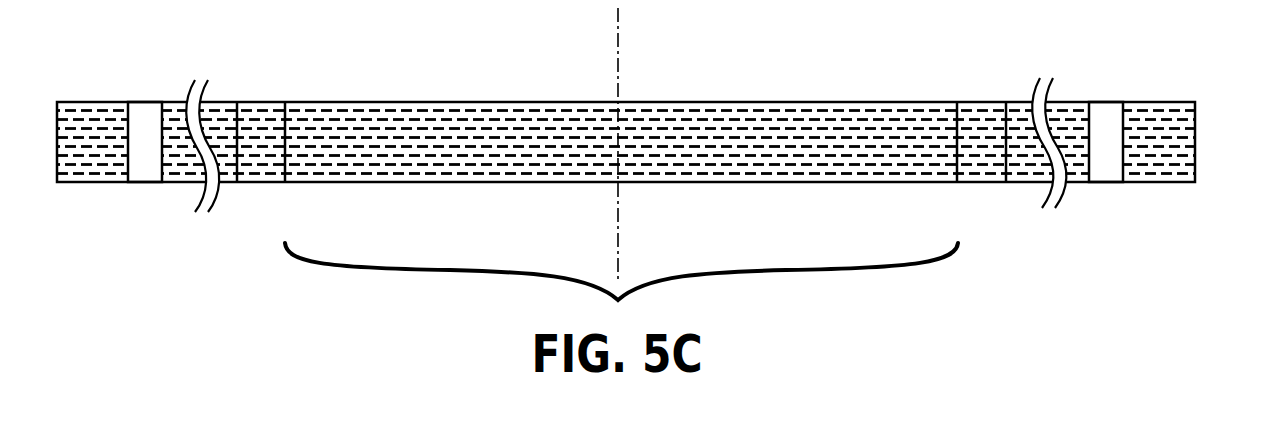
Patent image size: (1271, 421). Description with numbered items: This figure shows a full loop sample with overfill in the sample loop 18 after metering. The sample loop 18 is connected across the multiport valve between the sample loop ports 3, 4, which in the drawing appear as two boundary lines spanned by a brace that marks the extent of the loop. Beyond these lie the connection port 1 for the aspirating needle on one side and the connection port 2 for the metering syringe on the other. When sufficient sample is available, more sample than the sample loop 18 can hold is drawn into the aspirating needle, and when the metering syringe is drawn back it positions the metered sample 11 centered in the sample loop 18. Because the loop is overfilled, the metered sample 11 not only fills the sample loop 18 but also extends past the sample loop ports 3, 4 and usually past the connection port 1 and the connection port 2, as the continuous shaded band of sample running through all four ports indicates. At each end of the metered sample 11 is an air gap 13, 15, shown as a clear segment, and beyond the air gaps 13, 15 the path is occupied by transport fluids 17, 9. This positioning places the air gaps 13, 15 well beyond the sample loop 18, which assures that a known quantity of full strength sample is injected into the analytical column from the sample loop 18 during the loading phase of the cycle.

The first port 1 is at (235, 167).
The connection port for the metering syringe 2 is at (1003, 167).
The sample loop port 3 is at (285, 167).
The sample loop port 4 is at (953, 167).
The transport fluid 9 is at (1176, 181).
The metered sample 11 is at (817, 130).
The air gap 13 is at (1110, 113).
The air gap 15 is at (146, 112).
The transport fluid 17 is at (95, 112).
The sample loop 18 is at (1176, 82).